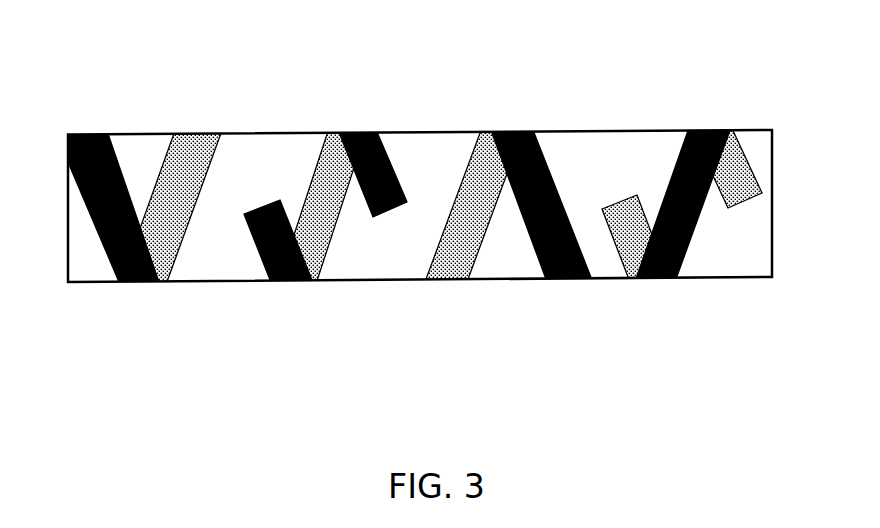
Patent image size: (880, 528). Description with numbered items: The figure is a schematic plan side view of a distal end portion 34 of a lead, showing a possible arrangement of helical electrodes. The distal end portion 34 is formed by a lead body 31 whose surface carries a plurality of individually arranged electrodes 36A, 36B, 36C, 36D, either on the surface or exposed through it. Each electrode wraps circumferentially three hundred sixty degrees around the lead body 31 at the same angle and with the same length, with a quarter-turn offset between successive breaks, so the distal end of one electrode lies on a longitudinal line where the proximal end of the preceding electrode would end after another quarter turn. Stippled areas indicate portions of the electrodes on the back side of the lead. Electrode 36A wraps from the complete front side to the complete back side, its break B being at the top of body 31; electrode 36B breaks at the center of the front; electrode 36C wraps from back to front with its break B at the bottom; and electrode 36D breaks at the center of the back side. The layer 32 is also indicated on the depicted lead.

The lead body 31 is at (570, 131).
The top layer 32 is at (417, 131).
The distal end portion 34 is at (470, 72).
The electrode 36A is at (142, 283).
The electrode 36B is at (302, 283).
The electrode 36C is at (452, 281).
The electrode 36D is at (653, 280).
The break B is at (135, 108).